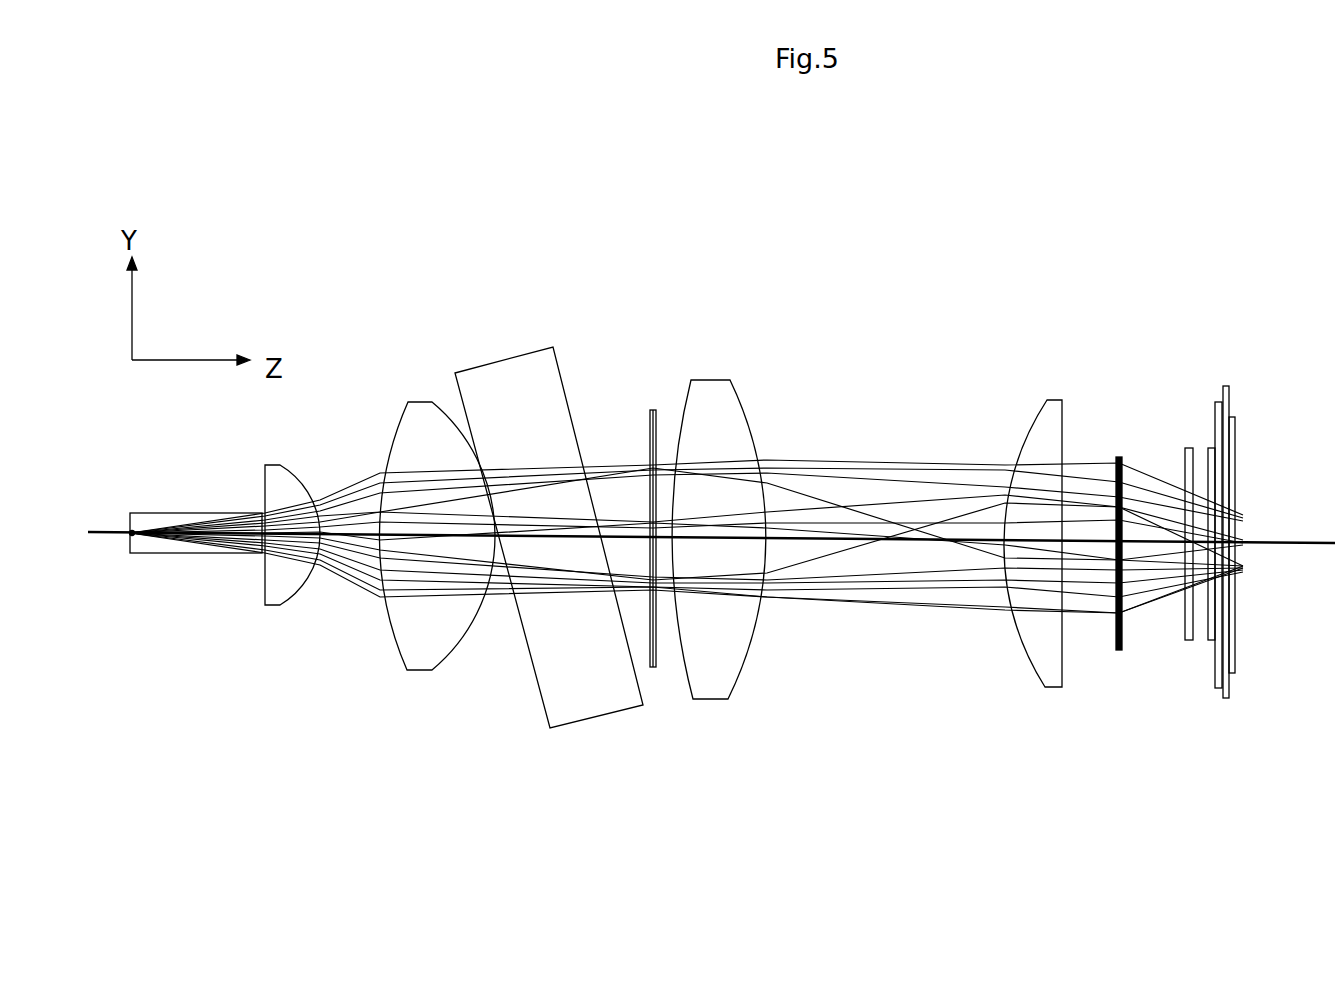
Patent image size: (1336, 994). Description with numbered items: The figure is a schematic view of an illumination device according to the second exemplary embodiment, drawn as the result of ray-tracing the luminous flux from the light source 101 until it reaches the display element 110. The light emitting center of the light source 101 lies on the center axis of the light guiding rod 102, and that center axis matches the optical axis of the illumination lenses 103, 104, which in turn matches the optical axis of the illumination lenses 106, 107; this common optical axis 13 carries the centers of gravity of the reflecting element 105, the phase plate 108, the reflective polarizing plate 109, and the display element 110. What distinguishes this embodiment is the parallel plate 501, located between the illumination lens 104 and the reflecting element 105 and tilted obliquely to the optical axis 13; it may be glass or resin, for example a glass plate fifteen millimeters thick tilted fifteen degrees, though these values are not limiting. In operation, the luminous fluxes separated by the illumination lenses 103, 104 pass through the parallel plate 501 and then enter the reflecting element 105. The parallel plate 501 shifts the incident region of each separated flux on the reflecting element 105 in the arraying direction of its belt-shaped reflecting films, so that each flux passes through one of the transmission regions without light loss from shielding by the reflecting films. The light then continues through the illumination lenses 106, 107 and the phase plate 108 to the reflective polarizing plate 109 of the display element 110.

The optical axis 13 is at (1272, 542).
The light source 101 is at (123, 527).
The light guiding rod 102 is at (137, 555).
The illumination lens 103 is at (270, 600).
The illumination lens 104 is at (417, 673).
The parallel plate 501 is at (522, 356).
The reflecting element 105 is at (651, 410).
The illumination lens 106 is at (699, 699).
The illumination lens 107 is at (1053, 687).
The phase plate 108 is at (1119, 457).
The reflective polarizing plate 109 is at (1189, 640).
The display element 110 is at (1233, 363).